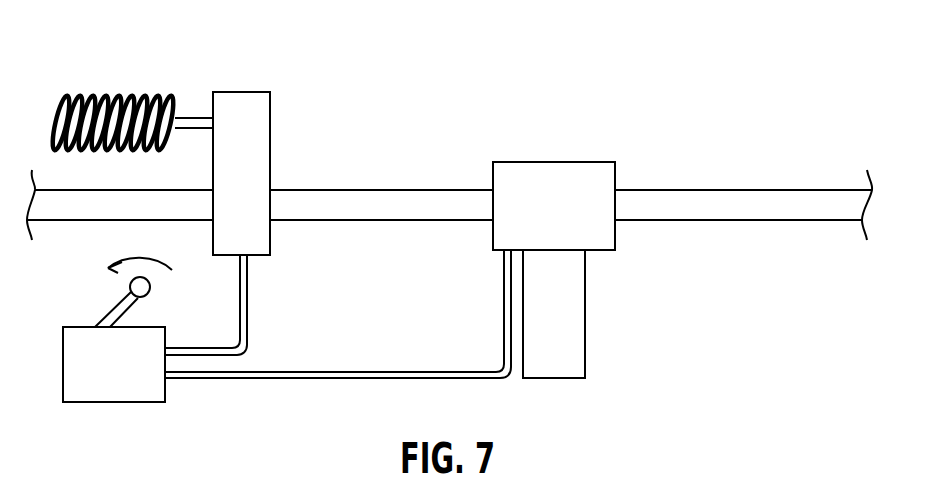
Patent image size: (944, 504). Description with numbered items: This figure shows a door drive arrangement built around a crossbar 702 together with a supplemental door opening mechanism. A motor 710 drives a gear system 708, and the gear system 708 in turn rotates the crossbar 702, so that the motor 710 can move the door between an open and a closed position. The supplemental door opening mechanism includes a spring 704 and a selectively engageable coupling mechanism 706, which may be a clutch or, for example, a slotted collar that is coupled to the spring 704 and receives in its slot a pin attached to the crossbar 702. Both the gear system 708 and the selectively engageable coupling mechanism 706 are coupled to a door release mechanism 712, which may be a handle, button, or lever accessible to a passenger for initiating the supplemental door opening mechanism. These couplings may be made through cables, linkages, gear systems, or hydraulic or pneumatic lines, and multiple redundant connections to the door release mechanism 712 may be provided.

The crossbar 702 is at (725, 190).
The spring 704 is at (108, 94).
The selectively engageable coupling mechanism 706 is at (270, 135).
The gear system 708 is at (556, 162).
The motor 710 is at (585, 306).
The door release mechanism 712 is at (118, 402).